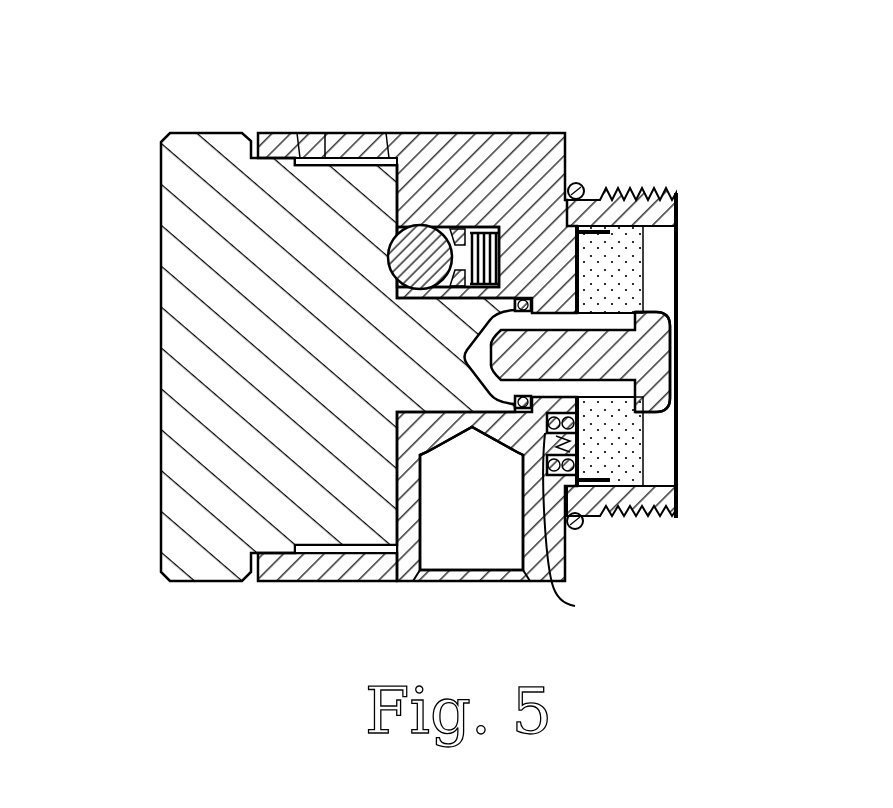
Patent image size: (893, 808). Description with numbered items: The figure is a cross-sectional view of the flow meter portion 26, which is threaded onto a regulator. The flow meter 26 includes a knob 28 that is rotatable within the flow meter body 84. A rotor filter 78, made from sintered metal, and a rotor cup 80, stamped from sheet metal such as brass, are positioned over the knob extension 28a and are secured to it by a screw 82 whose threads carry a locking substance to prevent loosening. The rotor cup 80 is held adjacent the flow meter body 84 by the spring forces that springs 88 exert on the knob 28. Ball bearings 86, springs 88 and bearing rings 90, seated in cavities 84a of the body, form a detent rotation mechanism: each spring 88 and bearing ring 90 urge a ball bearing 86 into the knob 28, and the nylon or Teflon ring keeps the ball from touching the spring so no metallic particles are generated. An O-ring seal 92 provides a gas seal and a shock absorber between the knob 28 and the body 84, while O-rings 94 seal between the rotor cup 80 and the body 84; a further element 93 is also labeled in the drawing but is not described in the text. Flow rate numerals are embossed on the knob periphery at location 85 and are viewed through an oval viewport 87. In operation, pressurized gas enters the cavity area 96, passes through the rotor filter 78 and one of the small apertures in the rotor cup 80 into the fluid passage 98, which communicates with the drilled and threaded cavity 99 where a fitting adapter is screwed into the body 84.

The flow meter portion 26 is at (156, 604).
The knob 28 is at (158, 272).
The knob extension 28a is at (650, 302).
The rotor filter 78 is at (650, 242).
The rotor cup 80 is at (678, 205).
The screw 82 is at (670, 357).
The flow meter body 84 is at (403, 582).
The cavities 84a is at (452, 227).
The location 85 is at (325, 132).
The ball bearing 86 is at (405, 227).
The viewport 87 is at (366, 141).
The spring 88 is at (547, 133).
The bearing ring 90 is at (478, 227).
The O-ring seal 92 is at (466, 354).
The O-ring 93 is at (583, 183).
The O-rings 94 is at (579, 529).
The cavity area 96 is at (683, 355).
The fluid passage 98 is at (560, 443).
The cavity 99 is at (477, 528).